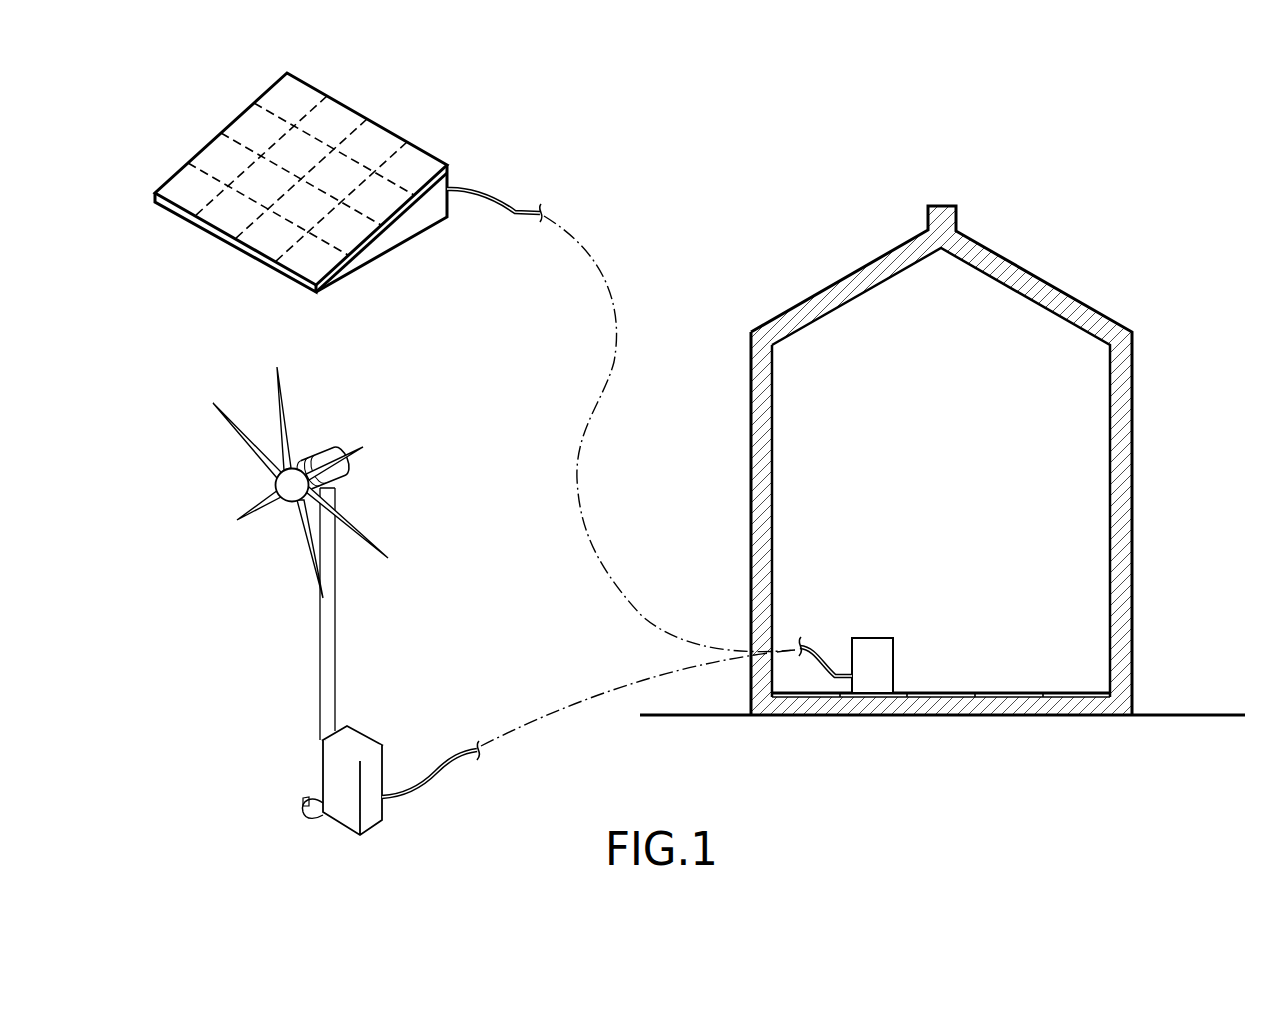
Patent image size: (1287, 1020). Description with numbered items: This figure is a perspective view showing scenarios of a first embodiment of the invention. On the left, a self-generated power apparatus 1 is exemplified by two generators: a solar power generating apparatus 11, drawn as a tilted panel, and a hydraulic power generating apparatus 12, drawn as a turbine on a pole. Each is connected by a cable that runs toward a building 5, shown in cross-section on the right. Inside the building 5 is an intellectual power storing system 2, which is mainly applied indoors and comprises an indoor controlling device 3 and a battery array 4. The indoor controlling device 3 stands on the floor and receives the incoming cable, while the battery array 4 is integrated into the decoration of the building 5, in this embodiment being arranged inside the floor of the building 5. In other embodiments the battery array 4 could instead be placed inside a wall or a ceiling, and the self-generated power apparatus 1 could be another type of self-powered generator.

The self-generated power apparatus 1 is at (495, 288).
The solar power generating apparatus 11 is at (395, 205).
The hydraulic power generating apparatus 12 is at (295, 432).
The intellectual power storing system 2 is at (857, 792).
The indoor controlling device 3 is at (873, 677).
The battery array 4 is at (932, 695).
The building 5 is at (1042, 295).